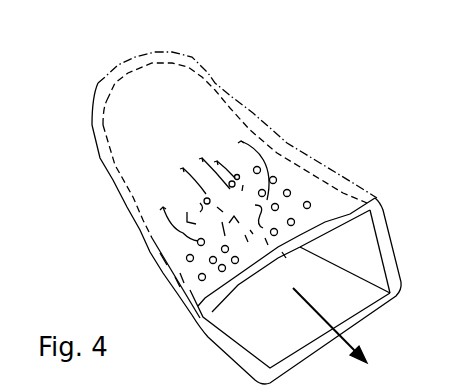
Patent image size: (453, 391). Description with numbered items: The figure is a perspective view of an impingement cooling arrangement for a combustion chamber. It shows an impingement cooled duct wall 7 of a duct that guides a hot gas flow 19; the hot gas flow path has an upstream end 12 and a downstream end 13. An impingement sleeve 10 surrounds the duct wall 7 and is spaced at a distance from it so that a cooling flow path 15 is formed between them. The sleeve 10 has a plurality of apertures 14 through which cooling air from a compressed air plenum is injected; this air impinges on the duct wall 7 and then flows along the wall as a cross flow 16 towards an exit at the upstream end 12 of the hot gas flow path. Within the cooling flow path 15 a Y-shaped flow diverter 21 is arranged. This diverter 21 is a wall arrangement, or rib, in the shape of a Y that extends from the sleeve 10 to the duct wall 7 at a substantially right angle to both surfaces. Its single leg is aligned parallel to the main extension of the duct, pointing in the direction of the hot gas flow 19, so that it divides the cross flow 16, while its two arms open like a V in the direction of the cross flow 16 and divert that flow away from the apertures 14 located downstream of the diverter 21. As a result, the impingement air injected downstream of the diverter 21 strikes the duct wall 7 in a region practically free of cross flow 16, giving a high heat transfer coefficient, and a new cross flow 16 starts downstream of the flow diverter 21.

The duct wall 7 is at (123, 172).
The impingement sleeve 10 is at (263, 117).
The upstream end 12 is at (134, 92).
The downstream end 13 is at (270, 327).
The apertures 14 is at (307, 192).
The cooling flow path 15 is at (383, 221).
The cross flow 16 is at (164, 206).
The hot gas flow 19 is at (345, 325).
The Y-shaped flow diverter 21 is at (232, 219).